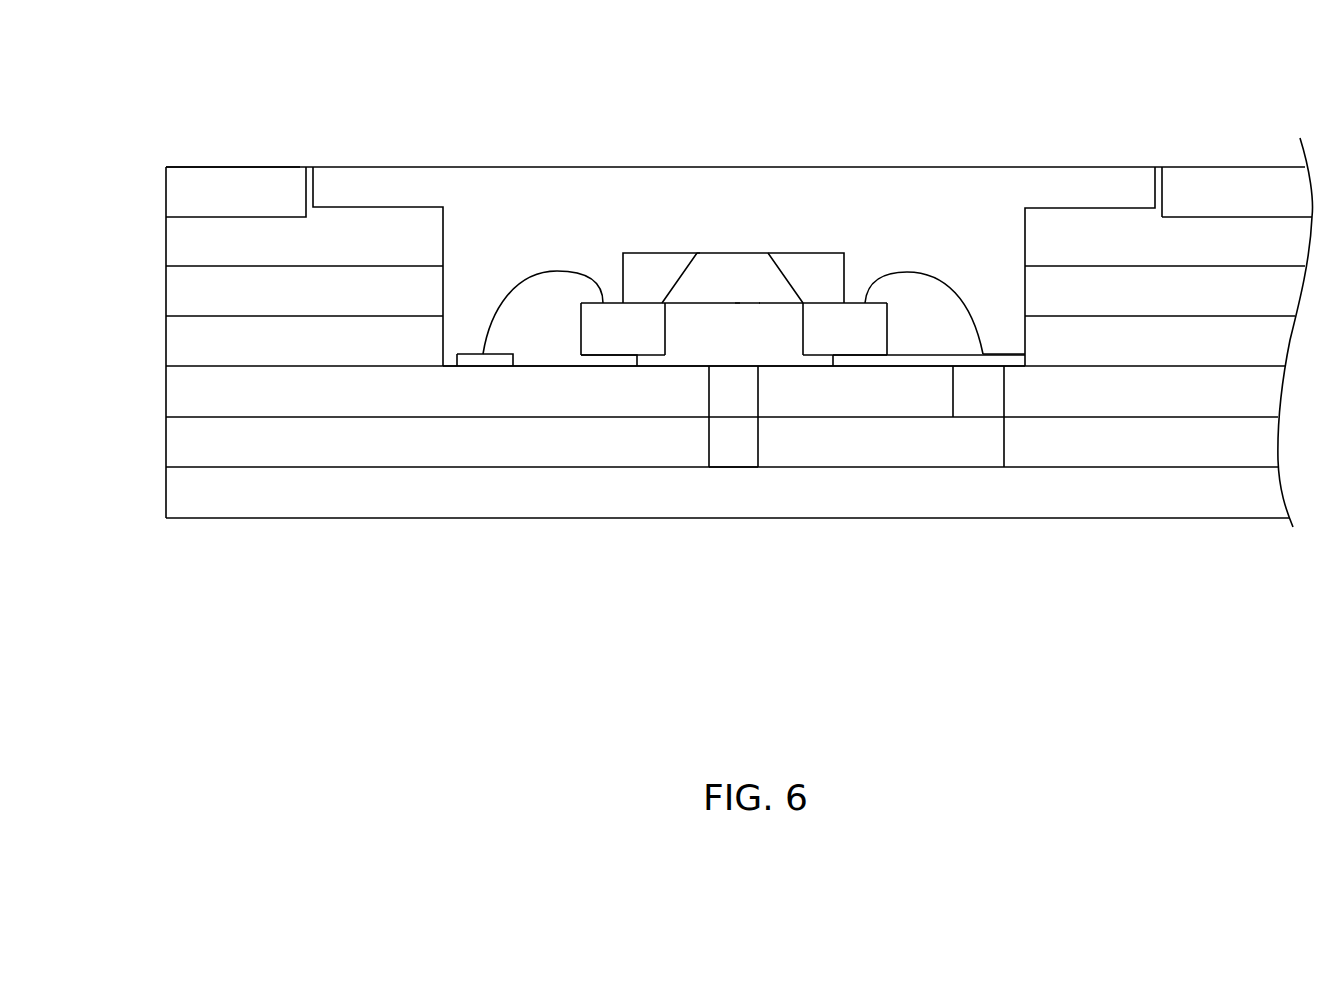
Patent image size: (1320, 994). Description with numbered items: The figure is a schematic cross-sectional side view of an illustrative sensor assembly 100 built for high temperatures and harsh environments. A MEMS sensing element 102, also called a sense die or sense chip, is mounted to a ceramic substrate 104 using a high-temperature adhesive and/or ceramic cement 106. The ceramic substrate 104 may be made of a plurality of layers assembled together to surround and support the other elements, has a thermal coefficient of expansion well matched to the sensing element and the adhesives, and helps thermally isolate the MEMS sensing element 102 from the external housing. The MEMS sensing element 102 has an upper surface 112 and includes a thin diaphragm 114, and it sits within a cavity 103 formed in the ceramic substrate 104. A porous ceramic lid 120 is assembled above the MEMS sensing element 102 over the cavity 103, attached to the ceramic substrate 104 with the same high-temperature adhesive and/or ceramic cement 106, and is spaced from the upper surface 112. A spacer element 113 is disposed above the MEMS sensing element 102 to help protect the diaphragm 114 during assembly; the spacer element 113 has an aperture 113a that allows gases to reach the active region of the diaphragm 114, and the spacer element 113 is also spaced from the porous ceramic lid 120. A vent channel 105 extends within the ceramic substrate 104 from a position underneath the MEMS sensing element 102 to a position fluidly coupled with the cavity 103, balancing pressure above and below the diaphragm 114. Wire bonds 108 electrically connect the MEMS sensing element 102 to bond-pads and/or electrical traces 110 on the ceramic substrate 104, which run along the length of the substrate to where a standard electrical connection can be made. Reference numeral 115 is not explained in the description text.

The sensor assembly 100 is at (255, 118).
The MEMS sensing element 102 is at (858, 303).
The cavity 103 is at (1005, 228).
The ceramic substrate 104 is at (160, 164).
The vent channel 105 is at (757, 463).
The high-temperature adhesive and/or ceramic cement 106 is at (378, 200).
The wire bonds 108 is at (557, 270).
The electrical traces 110 is at (483, 366).
The upper surface 112 is at (735, 303).
The spacer element 113 is at (820, 265).
The aperture 113a is at (723, 247).
The diaphragm 114 is at (759, 303).
The dielectric layer 115 is at (705, 237).
The porous ceramic lid 120 is at (596, 170).